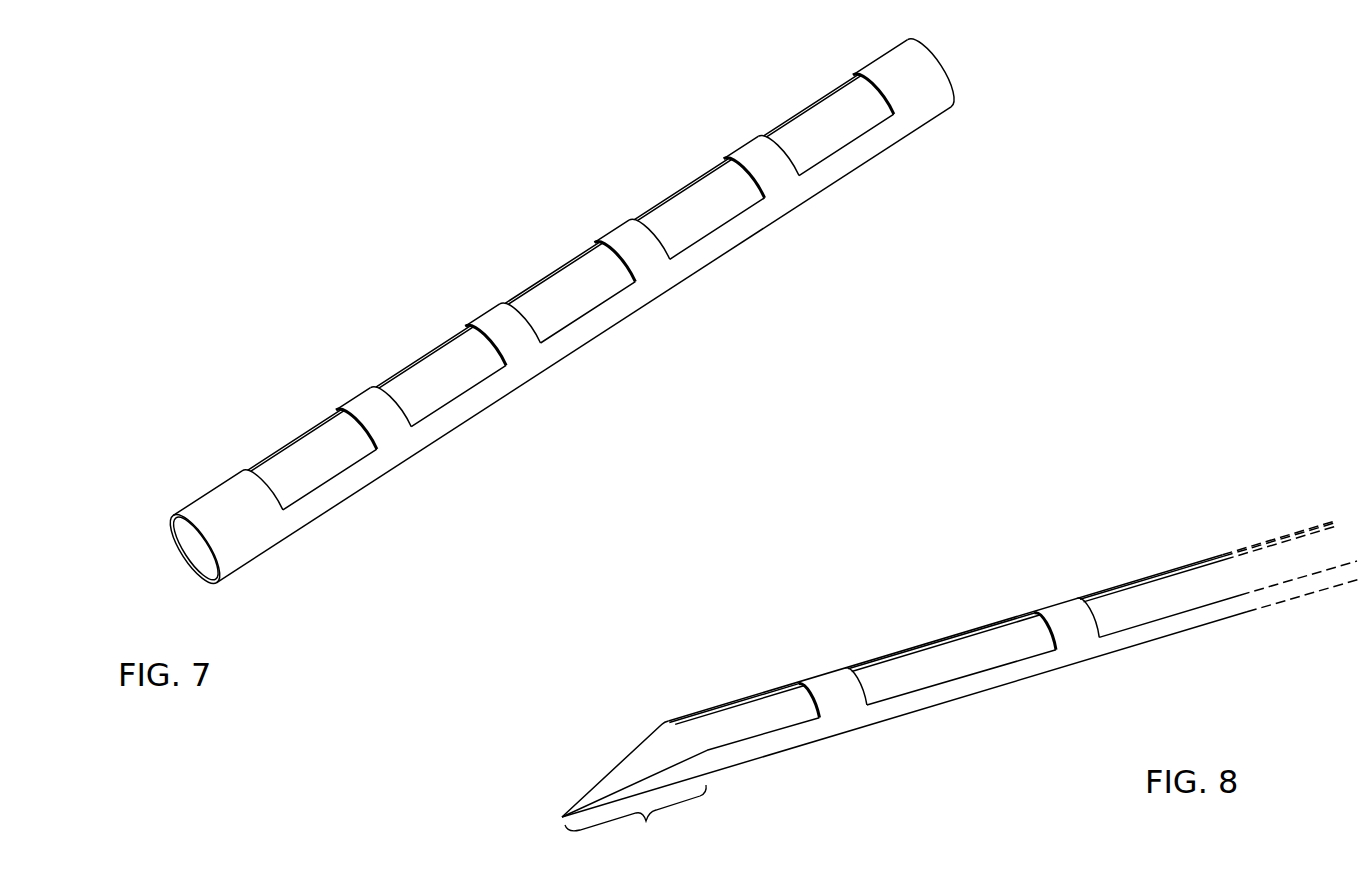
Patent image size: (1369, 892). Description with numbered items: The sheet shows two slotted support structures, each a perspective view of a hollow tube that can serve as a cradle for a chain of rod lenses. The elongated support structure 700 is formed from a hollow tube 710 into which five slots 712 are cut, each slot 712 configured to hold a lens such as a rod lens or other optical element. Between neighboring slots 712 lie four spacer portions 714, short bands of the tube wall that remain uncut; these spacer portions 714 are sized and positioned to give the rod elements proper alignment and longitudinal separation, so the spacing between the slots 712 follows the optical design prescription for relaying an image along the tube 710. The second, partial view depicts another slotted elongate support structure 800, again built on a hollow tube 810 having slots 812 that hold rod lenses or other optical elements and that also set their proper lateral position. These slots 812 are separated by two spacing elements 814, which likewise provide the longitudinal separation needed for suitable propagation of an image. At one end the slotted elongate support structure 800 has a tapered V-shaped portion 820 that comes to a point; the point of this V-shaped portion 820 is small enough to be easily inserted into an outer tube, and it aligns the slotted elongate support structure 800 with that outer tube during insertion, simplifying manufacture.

In FIG. 7, the elongated support structure 700 is at (342, 150).
In FIG. 7, the hollow tube 710 is at (220, 503).
In FIG. 7, the slots 712 is at (567, 300).
In FIG. 7, the spacer portions 714 is at (779, 183).
In FIG. 8, the slotted elongate support structure 800 is at (871, 580).
In FIG. 8, the hollow tube 810 is at (985, 688).
In FIG. 8, the slots 812 is at (945, 655).
In FIG. 8, the spacing elements 814 is at (828, 688).
In FIG. 8, the tapered V-shaped portion 820 is at (628, 788).